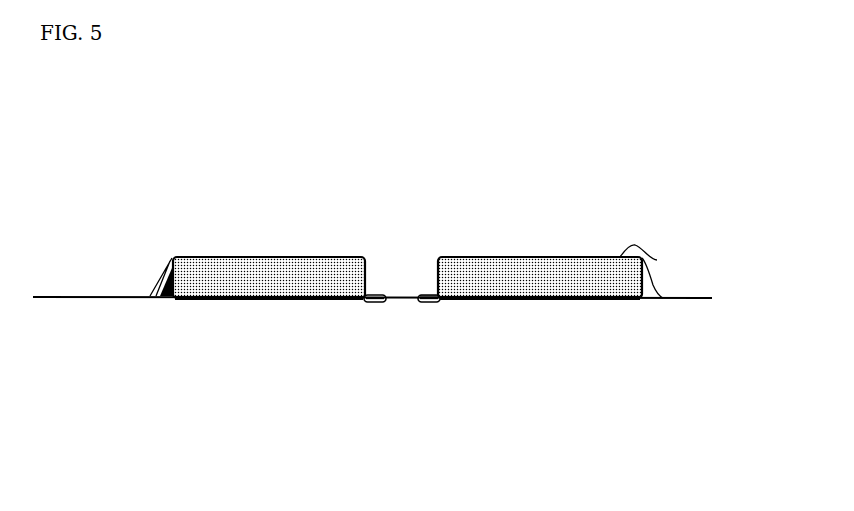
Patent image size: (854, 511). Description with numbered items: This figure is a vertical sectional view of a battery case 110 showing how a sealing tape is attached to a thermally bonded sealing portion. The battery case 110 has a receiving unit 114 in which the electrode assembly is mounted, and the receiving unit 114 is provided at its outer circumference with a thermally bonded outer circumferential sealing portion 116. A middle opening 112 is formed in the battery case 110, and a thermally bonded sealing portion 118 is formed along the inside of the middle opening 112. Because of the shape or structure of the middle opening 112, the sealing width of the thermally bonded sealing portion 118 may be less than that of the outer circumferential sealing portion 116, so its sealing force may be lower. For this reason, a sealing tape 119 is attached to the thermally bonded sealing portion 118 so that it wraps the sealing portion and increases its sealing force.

The battery case 110 is at (176, 228).
The middle opening 112 is at (402, 270).
The receiving unit 114 is at (657, 260).
The outer circumferential sealing portion 116 is at (693, 300).
The thermally bonded sealing portion 118 is at (427, 303).
The sealing tape 119 is at (377, 303).